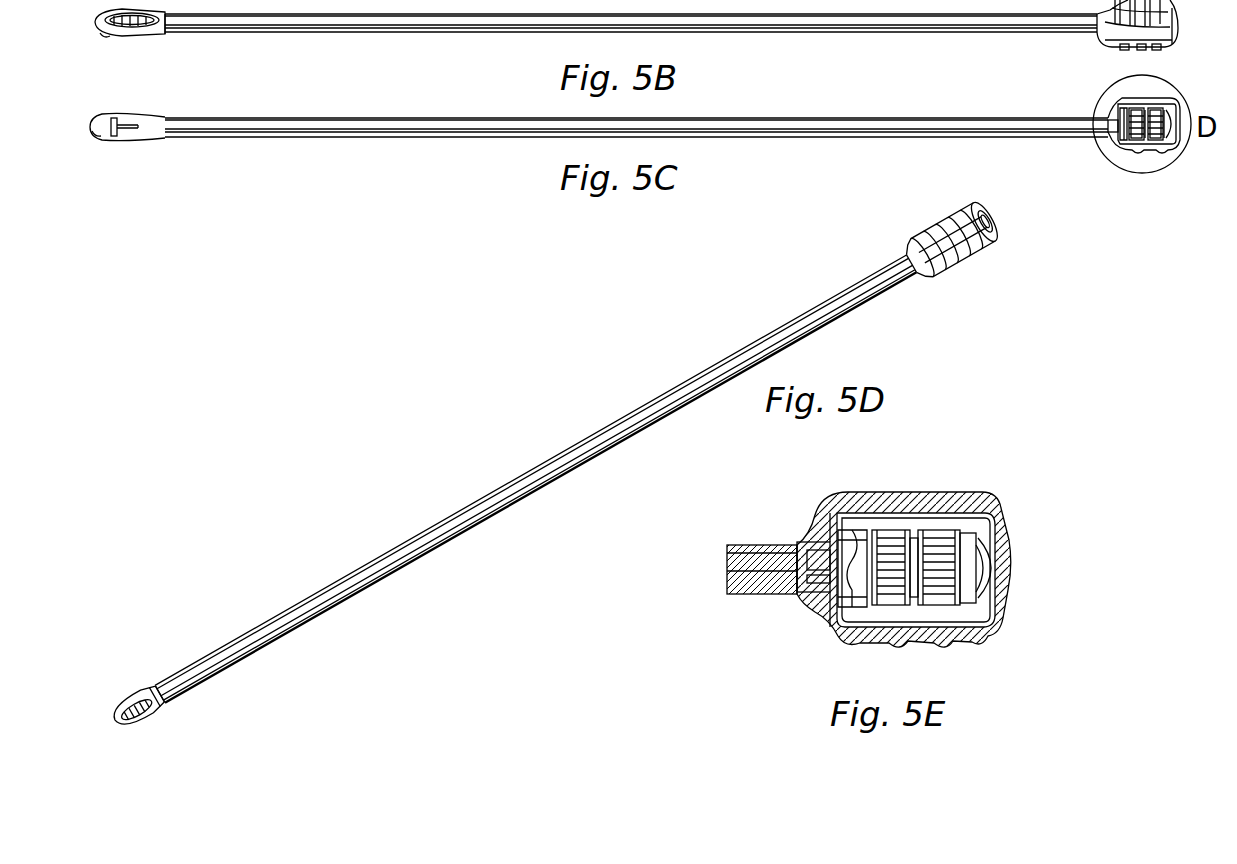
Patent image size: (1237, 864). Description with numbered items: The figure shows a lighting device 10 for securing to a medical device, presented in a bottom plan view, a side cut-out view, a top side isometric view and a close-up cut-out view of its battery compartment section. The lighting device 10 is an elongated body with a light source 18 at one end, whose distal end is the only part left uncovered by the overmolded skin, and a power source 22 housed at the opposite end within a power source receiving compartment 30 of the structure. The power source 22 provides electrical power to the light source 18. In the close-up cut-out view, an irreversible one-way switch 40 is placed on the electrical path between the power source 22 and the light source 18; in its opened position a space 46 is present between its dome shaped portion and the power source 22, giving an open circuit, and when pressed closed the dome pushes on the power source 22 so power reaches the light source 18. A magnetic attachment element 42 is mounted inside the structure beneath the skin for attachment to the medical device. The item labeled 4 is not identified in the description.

In FIG. 5C, the lighting device 10 is at (599, 134).
In FIG. 5D, the lighting device 10 is at (572, 416).
In FIG. 5C, the light source 18 is at (112, 146).
In FIG. 5C, the power source 22 is at (1131, 117).
In FIG. 5E, the power source 22 is at (933, 533).
In FIG. 5C, the handle 4 is at (1132, 107).
In FIG. 5E, the power source receiving compartment 30 is at (747, 646).
In FIG. 5E, the irreversible one-way switch 40 is at (947, 574).
In FIG. 5E, the magnetic attachment element 42 is at (985, 524).
In FIG. 5E, the space 46 is at (990, 562).